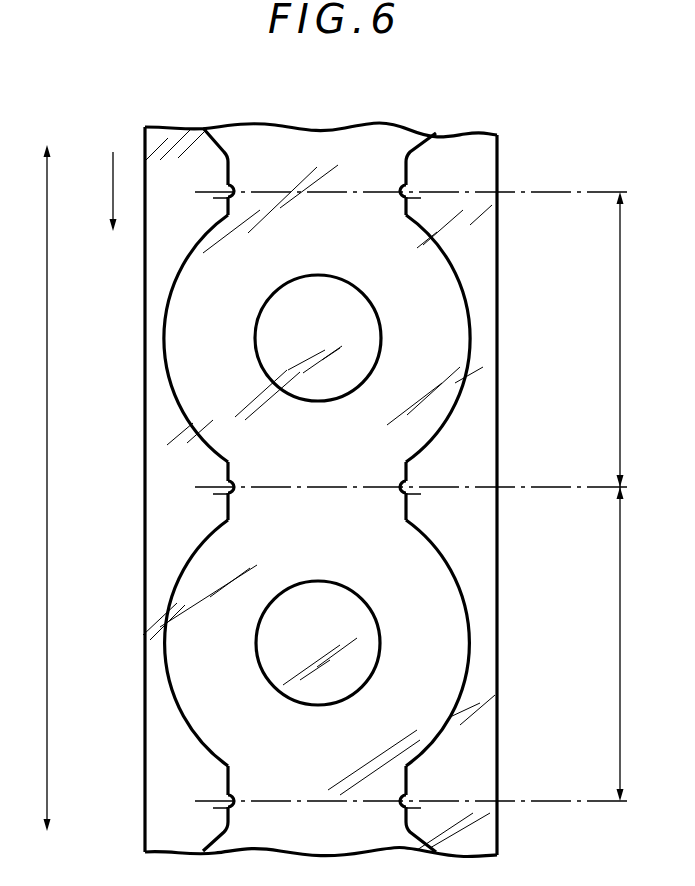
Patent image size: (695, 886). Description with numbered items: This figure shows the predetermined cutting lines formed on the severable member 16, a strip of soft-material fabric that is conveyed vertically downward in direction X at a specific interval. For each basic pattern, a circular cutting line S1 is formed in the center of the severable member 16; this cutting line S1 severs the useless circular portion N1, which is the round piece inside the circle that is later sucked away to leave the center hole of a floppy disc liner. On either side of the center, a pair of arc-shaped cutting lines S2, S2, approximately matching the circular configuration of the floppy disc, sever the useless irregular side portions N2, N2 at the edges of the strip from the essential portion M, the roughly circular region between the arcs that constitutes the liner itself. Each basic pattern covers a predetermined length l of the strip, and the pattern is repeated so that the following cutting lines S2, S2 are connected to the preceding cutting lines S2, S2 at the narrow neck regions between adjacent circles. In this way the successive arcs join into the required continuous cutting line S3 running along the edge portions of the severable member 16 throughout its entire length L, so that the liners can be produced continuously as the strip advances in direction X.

The severable member 16 is at (518, 118).
The cutting line S1 is at (254, 299).
The useless portion N1 is at (287, 339).
The cutting lines S2 is at (165, 386).
The useless side portions N2 is at (155, 433).
The essential portion M is at (453, 350).
The continuous cutting line S3 is at (190, 538).
The entire length L is at (36, 488).
The direction X is at (113, 199).
The predetermined length l is at (625, 496).